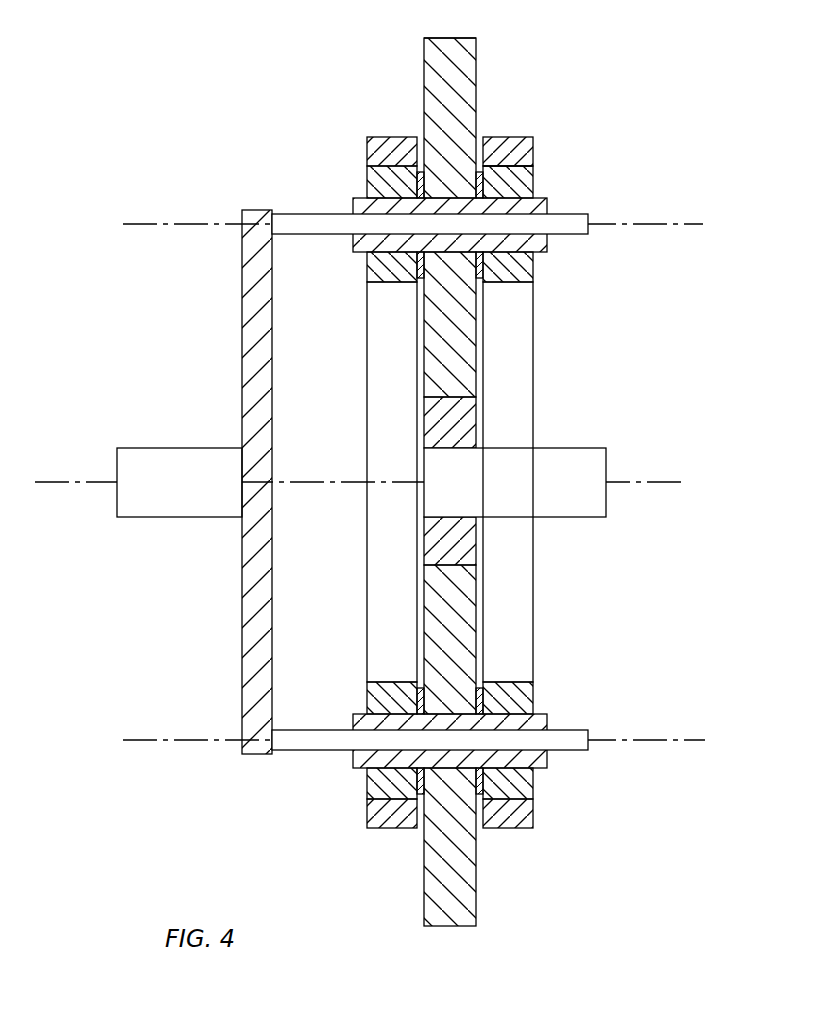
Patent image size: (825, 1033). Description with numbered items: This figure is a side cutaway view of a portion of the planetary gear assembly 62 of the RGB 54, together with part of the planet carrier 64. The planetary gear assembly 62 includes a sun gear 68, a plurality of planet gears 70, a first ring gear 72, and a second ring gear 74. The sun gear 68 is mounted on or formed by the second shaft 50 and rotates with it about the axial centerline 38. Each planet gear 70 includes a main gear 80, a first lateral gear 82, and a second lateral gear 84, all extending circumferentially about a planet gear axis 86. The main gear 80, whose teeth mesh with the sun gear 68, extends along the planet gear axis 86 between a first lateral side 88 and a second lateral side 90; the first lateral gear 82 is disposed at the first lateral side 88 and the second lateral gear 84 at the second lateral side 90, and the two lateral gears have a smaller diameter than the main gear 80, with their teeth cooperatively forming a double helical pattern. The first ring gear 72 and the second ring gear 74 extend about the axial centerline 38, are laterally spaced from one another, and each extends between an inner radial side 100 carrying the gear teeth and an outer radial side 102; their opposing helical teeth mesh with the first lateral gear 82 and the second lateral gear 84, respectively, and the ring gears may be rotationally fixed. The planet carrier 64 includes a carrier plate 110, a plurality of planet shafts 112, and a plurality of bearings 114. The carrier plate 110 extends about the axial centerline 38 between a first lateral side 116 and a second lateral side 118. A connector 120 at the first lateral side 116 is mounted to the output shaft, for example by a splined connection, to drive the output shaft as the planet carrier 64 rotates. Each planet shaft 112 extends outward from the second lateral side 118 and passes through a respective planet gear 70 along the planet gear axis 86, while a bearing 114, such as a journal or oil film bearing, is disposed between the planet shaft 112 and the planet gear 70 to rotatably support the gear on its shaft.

The axial centerline 38 is at (677, 480).
The second shaft 50 is at (577, 505).
The RGB 54 is at (735, 250).
The planetary gear assembly 62 is at (630, 298).
The planet carrier 64 is at (219, 270).
The sun gear 68 is at (467, 412).
The planet gear 70 is at (486, 107).
The first ring gear 72 is at (390, 137).
The second ring gear 74 is at (533, 148).
The main gear 80 is at (463, 59).
The first lateral gear 82 is at (367, 177).
The second lateral gear 84 is at (533, 177).
The planet gear axis 86 is at (697, 224).
The first lateral side 88 is at (424, 52).
The second lateral side 90 is at (486, 130).
The inner radial side 100 is at (505, 167).
The outer radial side 102 is at (403, 137).
The carrier plate 110 is at (253, 642).
The planet shaft 112 is at (313, 237).
The bearing 114 is at (547, 242).
The first lateral side 116 is at (234, 595).
The second lateral side 118 is at (288, 617).
The connector 120 is at (148, 505).